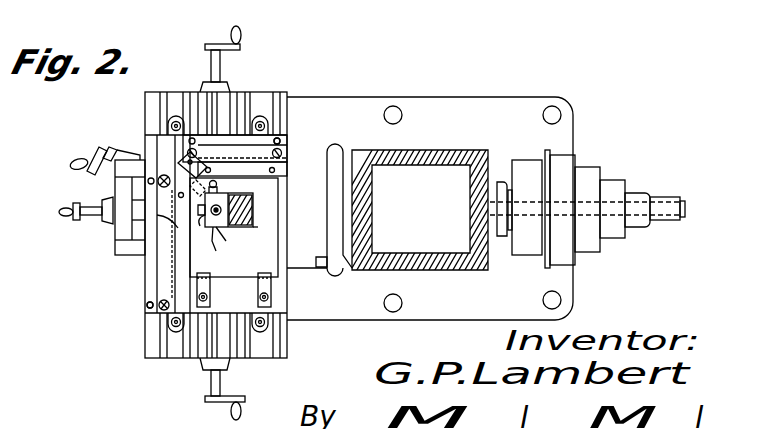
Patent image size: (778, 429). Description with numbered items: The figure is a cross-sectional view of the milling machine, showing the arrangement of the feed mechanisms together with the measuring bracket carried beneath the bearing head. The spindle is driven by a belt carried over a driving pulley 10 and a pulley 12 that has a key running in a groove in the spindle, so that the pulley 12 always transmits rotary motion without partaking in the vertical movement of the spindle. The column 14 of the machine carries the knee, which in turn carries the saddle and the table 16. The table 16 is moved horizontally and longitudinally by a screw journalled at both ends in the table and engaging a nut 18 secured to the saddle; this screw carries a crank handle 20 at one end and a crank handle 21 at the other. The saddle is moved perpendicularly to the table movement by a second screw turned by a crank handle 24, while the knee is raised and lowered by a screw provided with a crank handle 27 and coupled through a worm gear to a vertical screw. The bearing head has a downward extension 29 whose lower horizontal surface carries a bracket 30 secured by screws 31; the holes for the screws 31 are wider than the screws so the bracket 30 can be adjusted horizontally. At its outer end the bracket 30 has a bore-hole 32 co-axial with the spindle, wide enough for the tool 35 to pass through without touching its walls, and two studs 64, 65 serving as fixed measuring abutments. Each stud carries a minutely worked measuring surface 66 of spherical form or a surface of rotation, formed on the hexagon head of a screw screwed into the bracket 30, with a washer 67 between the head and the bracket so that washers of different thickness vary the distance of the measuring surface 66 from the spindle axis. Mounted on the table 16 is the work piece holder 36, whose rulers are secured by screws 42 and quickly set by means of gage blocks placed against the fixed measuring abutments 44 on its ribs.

The driving pulley 10 is at (522, 169).
The pulley 12 is at (430, 208).
The column 14 is at (452, 156).
The table 16 is at (286, 218).
The nut 18 is at (334, 210).
The crank handle 20 is at (217, 44).
The crank handle 21 is at (220, 402).
The crank handle 24 is at (66, 217).
The crank handle 27 is at (79, 159).
The downward extension 29 is at (250, 225).
The bracket 30 is at (232, 196).
The screws 31 is at (248, 205).
The bore-hole 32 is at (216, 251).
The tool 35 is at (226, 241).
The work piece support or holder 36 is at (213, 303).
The screws 42 is at (165, 175).
The fixed measuring abutments 44 is at (150, 308).
The stud 64 is at (220, 177).
The stud 65 is at (178, 229).
The measuring surface 66 is at (212, 157).
The washer 67 is at (200, 226).